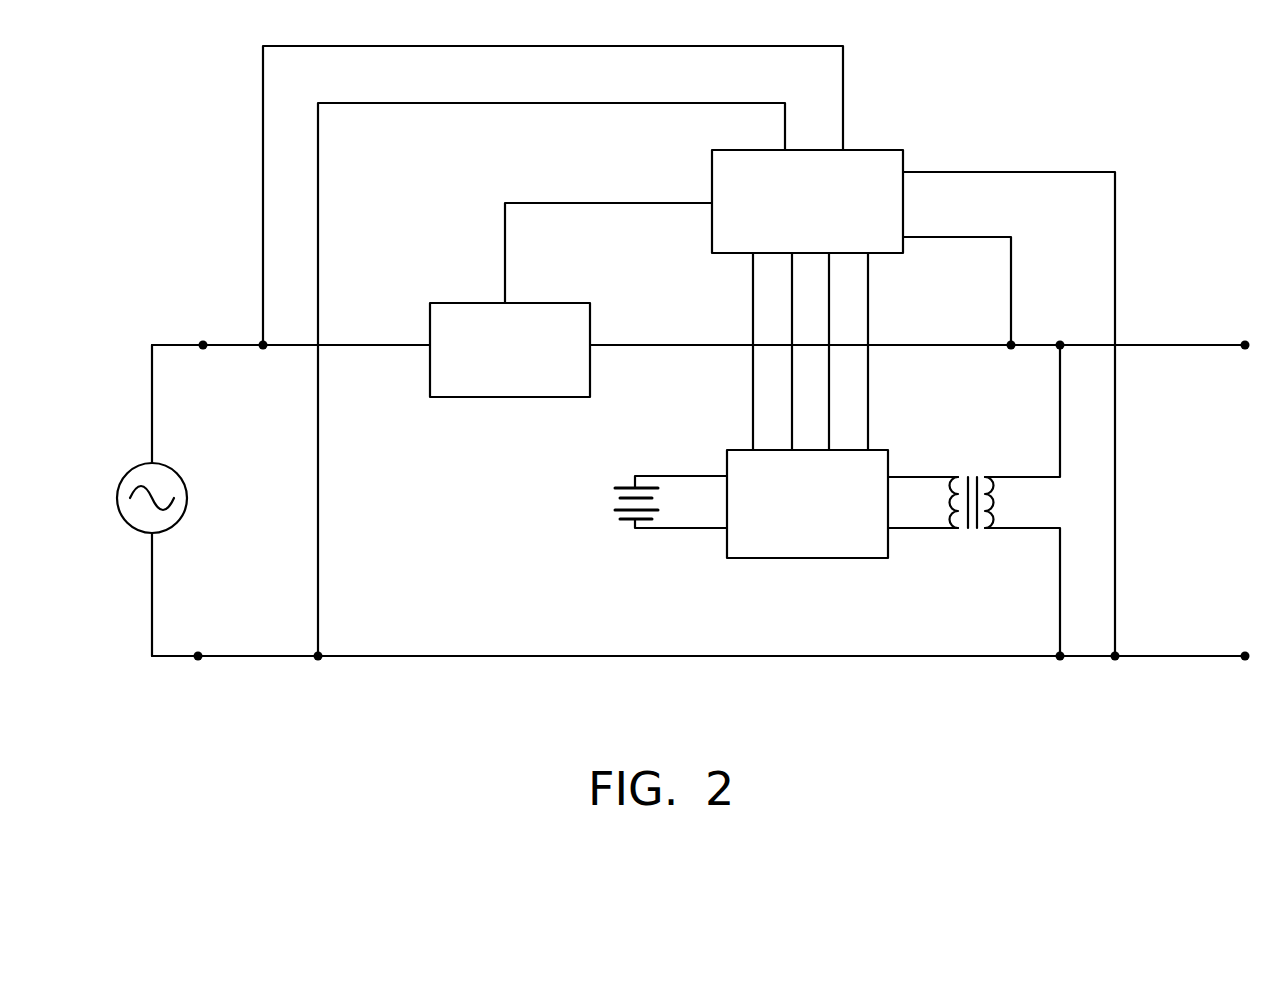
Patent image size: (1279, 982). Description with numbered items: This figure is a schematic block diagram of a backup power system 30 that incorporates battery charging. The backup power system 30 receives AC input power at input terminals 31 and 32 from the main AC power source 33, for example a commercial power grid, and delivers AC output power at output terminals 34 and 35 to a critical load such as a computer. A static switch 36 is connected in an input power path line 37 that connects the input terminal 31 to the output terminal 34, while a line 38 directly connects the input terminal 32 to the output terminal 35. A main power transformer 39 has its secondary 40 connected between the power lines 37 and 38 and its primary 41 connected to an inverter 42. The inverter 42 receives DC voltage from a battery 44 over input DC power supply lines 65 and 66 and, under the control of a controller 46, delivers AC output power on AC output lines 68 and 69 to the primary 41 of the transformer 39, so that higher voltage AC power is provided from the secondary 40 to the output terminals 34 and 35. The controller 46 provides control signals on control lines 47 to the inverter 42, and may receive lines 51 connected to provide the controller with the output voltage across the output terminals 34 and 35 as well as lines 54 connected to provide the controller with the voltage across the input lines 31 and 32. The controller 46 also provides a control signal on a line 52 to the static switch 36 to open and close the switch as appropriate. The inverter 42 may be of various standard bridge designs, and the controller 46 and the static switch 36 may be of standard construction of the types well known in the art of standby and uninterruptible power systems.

The backup power system 30 is at (948, 167).
The input terminal 31 is at (228, 345).
The input terminal 32 is at (258, 657).
The main AC power source 33 is at (122, 482).
The output terminal 34 is at (1167, 345).
The output terminal 35 is at (1175, 658).
The static switch 36 is at (462, 303).
The input power path line 37 is at (625, 345).
The line 38 is at (495, 657).
The main power transformer 39 is at (972, 532).
The secondary 40 is at (987, 503).
The primary 41 is at (958, 477).
The inverter 42 is at (773, 560).
The battery 44 is at (630, 487).
The controller 46 is at (863, 148).
The control lines 47 is at (753, 332).
The lines 51 is at (982, 173).
The line 52 is at (647, 203).
The lines 54 is at (400, 47).
The input DC power supply line 65 is at (702, 477).
The input DC power supply line 66 is at (693, 528).
The AC output line 68 is at (900, 530).
The AC output line 69 is at (933, 477).